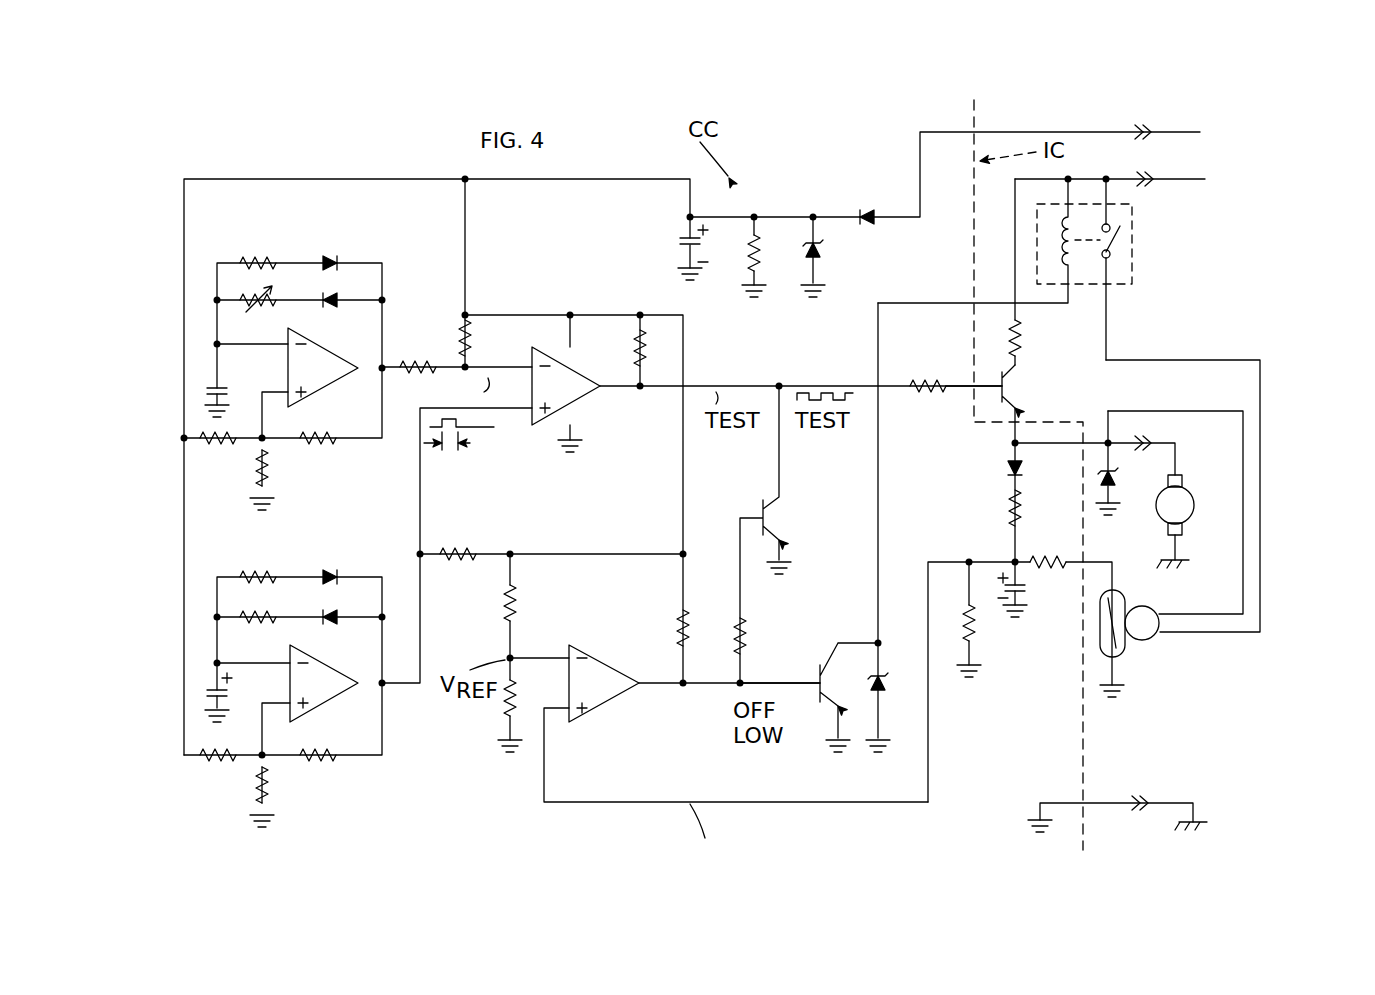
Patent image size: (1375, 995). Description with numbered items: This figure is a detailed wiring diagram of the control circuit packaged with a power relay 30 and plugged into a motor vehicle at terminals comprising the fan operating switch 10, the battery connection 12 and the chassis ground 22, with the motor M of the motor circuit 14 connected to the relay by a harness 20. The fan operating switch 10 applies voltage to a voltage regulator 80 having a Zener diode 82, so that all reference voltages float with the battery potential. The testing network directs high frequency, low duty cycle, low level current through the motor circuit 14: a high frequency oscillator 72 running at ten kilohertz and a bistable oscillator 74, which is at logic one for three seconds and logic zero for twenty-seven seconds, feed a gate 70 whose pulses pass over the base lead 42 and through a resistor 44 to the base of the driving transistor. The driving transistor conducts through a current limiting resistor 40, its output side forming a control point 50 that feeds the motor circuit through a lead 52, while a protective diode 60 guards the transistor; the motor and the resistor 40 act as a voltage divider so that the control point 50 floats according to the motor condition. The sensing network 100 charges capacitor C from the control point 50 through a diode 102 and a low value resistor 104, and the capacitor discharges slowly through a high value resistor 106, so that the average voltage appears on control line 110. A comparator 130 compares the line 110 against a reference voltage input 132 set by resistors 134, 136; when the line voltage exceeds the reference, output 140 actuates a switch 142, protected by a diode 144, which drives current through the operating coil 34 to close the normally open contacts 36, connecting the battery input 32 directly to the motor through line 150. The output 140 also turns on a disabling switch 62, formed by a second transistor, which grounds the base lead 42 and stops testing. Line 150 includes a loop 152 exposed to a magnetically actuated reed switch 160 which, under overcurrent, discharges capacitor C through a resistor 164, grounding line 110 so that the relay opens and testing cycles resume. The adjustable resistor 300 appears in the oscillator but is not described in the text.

The fan operating switch 10 is at (1188, 136).
The battery connection 12 is at (1196, 184).
The motor circuit 14 is at (1198, 485).
The harness 20 is at (1170, 456).
The chassis ground 22 is at (1158, 808).
The power relay 30 is at (1038, 269).
The battery input 32 is at (1082, 178).
The operating coil 34 is at (1068, 285).
The normally open contacts 36 is at (1130, 242).
The current limiting resistor 40 is at (1024, 352).
The base lead 42 is at (958, 398).
The base resistor 44 is at (920, 400).
The control point 50 is at (1020, 438).
The lead 52 is at (1062, 448).
The protective diode 60 is at (1114, 490).
The disabling switch 62 is at (783, 492).
The gate 70 is at (598, 394).
The high frequency oscillator 72 is at (304, 356).
The bistable oscillator 74 is at (308, 575).
The voltage regulator 80 is at (790, 212).
The Zener diode 82 is at (820, 256).
The sensing network 100 is at (964, 622).
The diode 102 is at (1006, 470).
The charging resistor 104 is at (1008, 506).
The discharge resistor 106 is at (962, 620).
The control line 110 is at (830, 804).
The comparator 130 is at (598, 662).
The reference voltage input 132 is at (528, 656).
The reference resistor 134 is at (506, 604).
The reference resistor 136 is at (506, 702).
The comparator output 140 is at (798, 692).
The switch 142 is at (828, 656).
The protective diode 144 is at (886, 690).
The line 150 is at (1112, 350).
The loop 152 is at (1150, 608).
The magnetically actuated switch 160 is at (1126, 652).
The discharge rate resistor 164 is at (1052, 572).
The variable resistor 300 is at (240, 282).